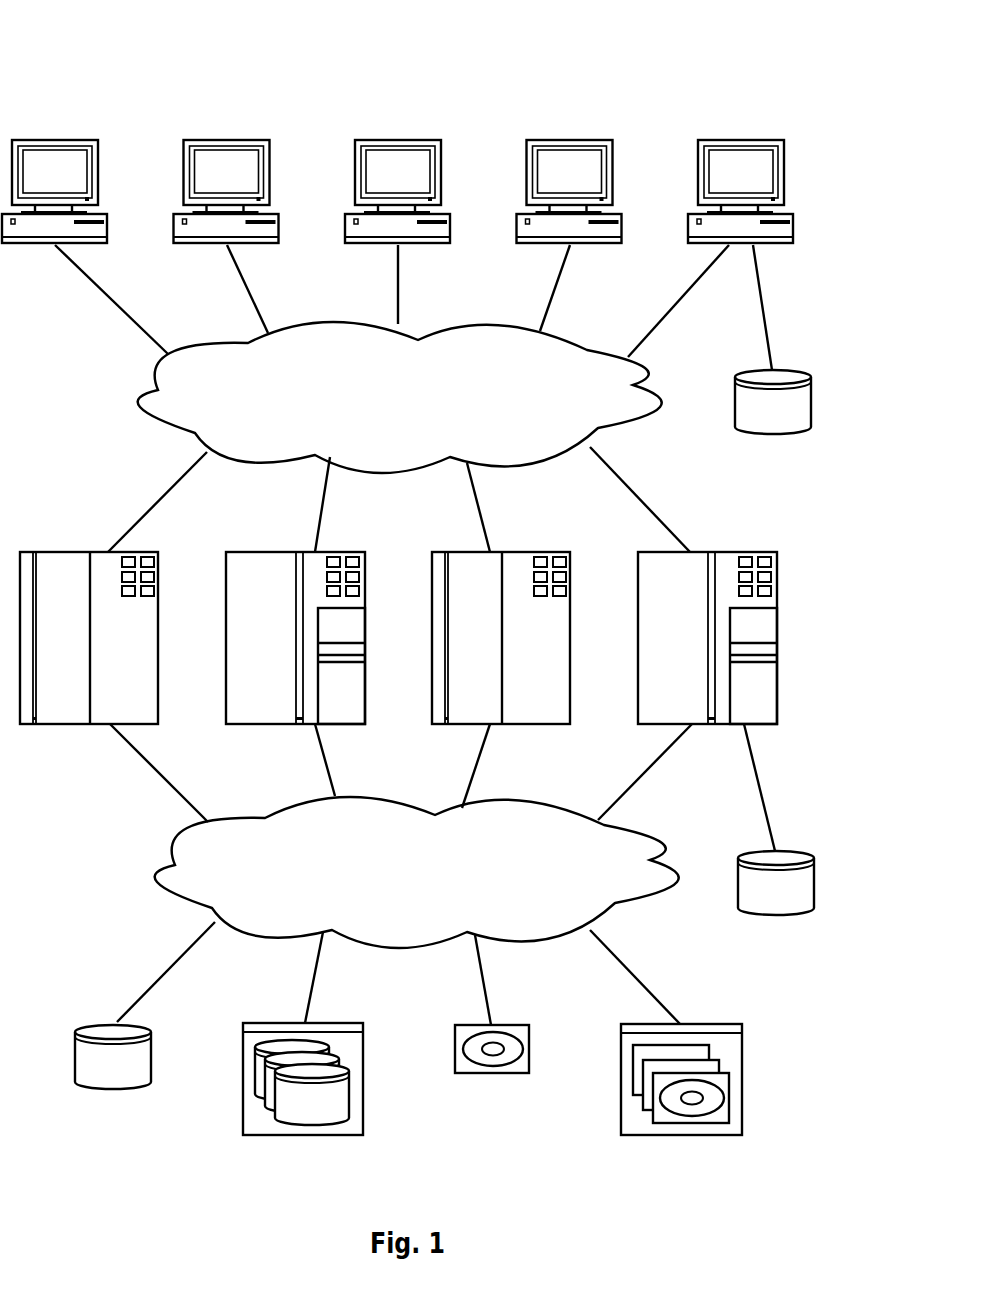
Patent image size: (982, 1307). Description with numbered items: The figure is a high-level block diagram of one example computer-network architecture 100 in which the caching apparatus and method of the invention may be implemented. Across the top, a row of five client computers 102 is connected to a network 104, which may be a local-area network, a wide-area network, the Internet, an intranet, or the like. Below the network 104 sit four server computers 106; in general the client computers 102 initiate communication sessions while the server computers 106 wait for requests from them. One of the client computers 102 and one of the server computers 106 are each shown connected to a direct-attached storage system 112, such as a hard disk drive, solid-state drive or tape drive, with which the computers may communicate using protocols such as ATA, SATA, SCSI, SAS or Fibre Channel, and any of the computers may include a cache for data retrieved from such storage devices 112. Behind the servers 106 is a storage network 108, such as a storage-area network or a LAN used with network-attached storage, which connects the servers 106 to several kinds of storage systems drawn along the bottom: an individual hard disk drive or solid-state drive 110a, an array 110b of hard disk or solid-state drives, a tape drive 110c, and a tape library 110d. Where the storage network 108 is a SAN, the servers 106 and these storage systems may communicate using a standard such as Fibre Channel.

The computer-network architecture 100 is at (124, 68).
The client computer 102 is at (72, 179).
The network 104 is at (572, 414).
The server computer 106 is at (81, 644).
The storage network 108 is at (554, 884).
The individual hard disk drive or solid state drive 110a is at (112, 1083).
The array of hard disk drives or solid-state drives 110b is at (303, 1135).
The tape drive 110c is at (493, 1073).
The tape library 110d is at (683, 1135).
The direct-attached storage system 112 is at (793, 419).